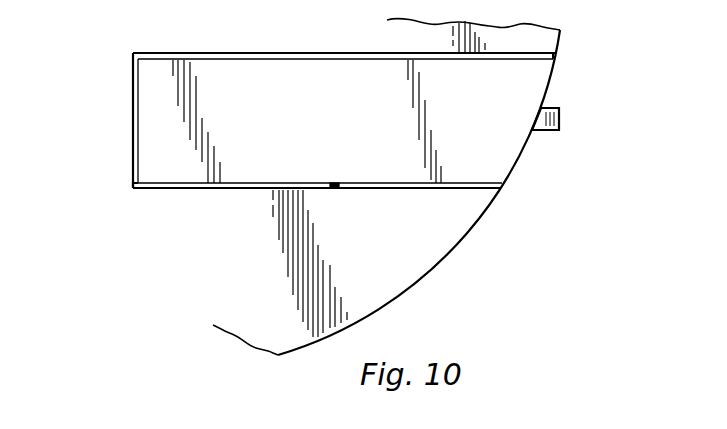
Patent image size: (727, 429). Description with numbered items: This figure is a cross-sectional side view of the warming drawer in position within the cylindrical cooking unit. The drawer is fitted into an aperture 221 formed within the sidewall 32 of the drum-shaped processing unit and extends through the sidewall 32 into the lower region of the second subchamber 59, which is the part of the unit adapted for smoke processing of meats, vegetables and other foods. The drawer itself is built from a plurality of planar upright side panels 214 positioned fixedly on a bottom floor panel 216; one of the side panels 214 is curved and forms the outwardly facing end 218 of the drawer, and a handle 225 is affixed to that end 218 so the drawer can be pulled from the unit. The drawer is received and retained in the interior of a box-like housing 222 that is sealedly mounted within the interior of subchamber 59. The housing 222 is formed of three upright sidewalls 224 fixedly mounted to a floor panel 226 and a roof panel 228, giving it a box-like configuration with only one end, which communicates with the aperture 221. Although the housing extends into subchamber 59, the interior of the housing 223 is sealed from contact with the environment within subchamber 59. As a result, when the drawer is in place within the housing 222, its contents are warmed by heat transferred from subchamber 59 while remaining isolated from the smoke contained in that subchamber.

The sidewall 32 is at (409, 186).
The second subchamber 59 is at (261, 276).
The side panels 214 is at (348, 128).
The bottom floor panel 216 is at (243, 190).
The outwardly facing end 218 is at (517, 157).
The aperture 221 is at (555, 72).
The box-like housing 222 is at (167, 190).
The interior of the housing 223 is at (193, 53).
The upright sidewalls 224 is at (133, 148).
The handle 225 is at (559, 118).
The floor panel 226 is at (407, 190).
The roof panel 228 is at (299, 53).